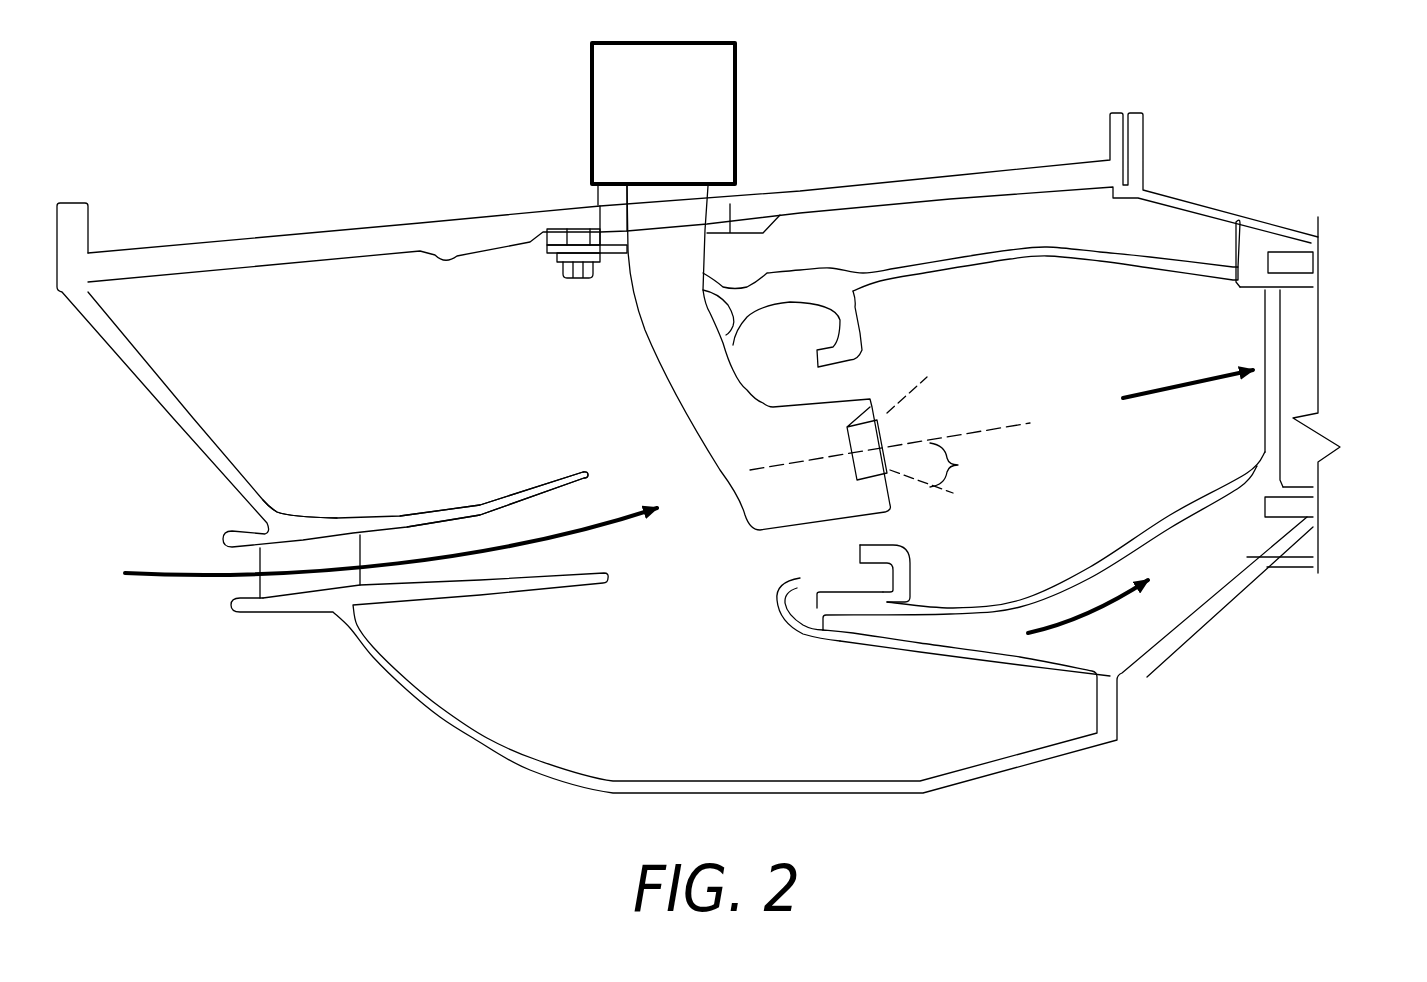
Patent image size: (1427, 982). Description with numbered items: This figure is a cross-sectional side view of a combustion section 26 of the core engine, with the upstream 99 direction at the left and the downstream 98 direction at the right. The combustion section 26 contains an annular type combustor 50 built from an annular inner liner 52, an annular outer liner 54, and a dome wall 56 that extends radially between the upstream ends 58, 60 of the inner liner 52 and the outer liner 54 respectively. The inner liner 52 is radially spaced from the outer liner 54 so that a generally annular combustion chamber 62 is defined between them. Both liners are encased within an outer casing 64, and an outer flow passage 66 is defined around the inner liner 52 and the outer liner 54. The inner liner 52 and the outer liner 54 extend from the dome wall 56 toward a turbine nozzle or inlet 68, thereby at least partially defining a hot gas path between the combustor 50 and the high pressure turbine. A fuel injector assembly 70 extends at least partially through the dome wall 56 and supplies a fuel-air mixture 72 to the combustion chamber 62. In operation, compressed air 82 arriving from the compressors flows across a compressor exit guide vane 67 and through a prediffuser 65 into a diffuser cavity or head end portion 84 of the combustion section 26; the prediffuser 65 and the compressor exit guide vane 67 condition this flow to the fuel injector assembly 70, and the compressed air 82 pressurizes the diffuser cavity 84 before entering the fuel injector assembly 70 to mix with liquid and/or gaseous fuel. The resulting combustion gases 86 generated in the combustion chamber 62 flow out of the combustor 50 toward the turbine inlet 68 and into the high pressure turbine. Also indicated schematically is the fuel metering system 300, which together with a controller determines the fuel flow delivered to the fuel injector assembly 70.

The combustion section 26 is at (895, 92).
The annular type combustor 50 is at (985, 240).
The annular inner liner 52 is at (1088, 565).
The annular outer liner 54 is at (930, 273).
The dome wall 56 is at (840, 547).
The upstream end of the inner liner 58 is at (863, 628).
The upstream end of the outer liner 60 is at (802, 252).
The combustion chamber 62 is at (1068, 410).
The outer casing 64 is at (1070, 145).
The prediffuser 65 is at (543, 467).
The outer flow passage 66 is at (1145, 225).
The compressor exit guide vane 67 is at (333, 553).
The turbine nozzle or inlet 68 is at (1293, 345).
The fuel injector assembly 70 is at (808, 452).
The fuel-air mixture 72 is at (958, 465).
The compressed air 82 is at (163, 580).
The diffuser cavity or head end portion 84 is at (452, 298).
The combustion gases 86 is at (1167, 380).
The downstream 98 is at (1413, 375).
The upstream 99 is at (95, 518).
The fuel metering system 300 is at (692, 132).